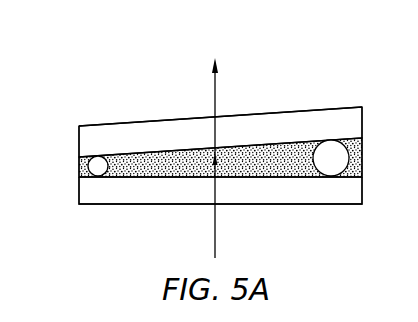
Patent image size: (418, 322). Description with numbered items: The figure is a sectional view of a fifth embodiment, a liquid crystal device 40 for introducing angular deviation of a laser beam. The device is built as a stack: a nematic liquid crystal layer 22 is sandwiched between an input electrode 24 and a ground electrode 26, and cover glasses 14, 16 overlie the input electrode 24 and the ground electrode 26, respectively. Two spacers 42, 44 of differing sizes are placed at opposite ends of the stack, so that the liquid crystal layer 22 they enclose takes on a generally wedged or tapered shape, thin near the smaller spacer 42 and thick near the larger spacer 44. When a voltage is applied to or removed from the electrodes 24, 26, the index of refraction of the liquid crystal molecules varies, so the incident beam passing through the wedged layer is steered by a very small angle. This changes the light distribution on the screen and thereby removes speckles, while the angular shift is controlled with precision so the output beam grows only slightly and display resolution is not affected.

The liquid crystal device 40 is at (321, 80).
The cover glass 14 is at (162, 126).
The nematic liquid crystal layer 22 is at (278, 147).
The input electrode 24 is at (152, 156).
The ground electrode 26 is at (192, 176).
The cover glass 16 is at (125, 202).
The spacer 42 is at (88, 165).
The spacer 44 is at (342, 160).